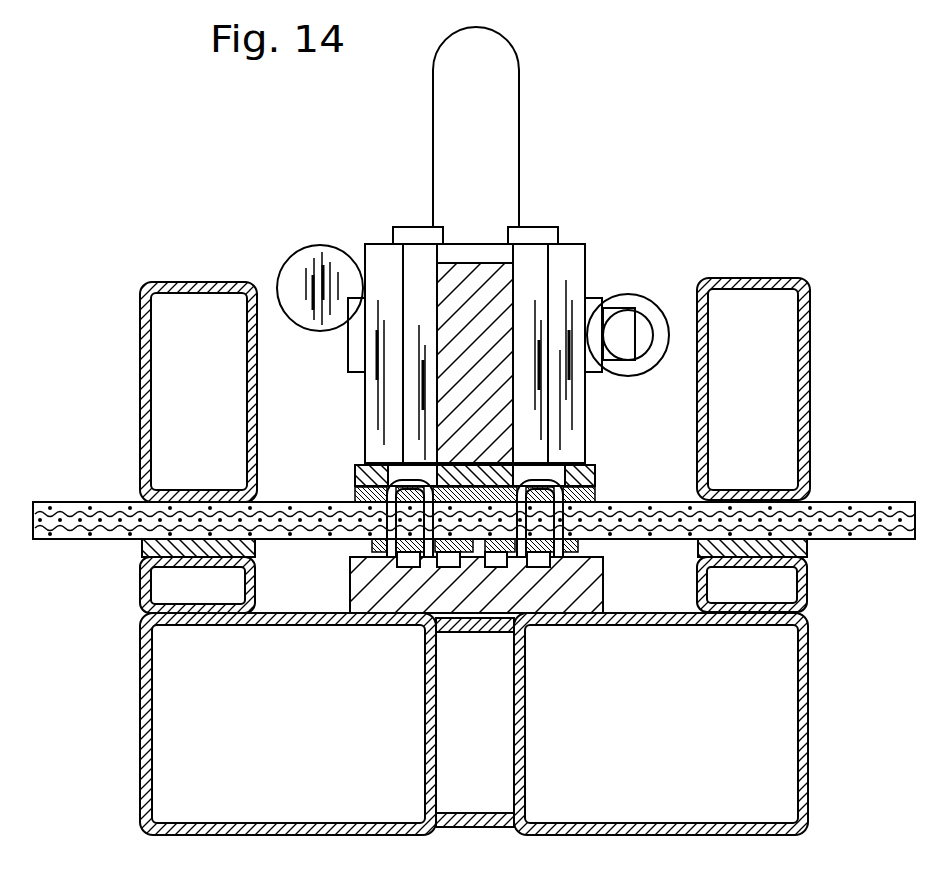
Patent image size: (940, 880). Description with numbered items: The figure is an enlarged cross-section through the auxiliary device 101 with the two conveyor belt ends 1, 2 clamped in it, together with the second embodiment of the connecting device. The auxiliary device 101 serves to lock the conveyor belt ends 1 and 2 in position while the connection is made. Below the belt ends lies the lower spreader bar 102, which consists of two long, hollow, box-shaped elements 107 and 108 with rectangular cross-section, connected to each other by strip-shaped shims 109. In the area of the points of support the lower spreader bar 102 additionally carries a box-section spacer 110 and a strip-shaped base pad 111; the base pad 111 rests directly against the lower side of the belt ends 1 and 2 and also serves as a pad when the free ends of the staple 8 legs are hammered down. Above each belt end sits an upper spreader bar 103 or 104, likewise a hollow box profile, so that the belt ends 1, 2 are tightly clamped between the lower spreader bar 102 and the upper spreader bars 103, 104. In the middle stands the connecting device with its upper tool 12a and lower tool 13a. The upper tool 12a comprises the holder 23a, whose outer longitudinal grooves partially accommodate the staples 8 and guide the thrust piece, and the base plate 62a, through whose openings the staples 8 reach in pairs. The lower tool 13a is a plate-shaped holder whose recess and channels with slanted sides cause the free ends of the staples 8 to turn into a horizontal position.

The conveyor belt end 1 is at (60, 512).
The conveyor belt end 2 is at (877, 500).
The staple 8 is at (603, 549).
The upper tool 12a is at (588, 258).
The lower tool 13a is at (350, 573).
The holder 23a is at (392, 245).
The base plate 62a is at (600, 472).
The auxiliary device 101 is at (204, 250).
The lower spreader bar 102 is at (810, 690).
The upper spreader bar 103 is at (150, 285).
The upper spreader bar 104 is at (810, 305).
The box-shaped element 107 is at (140, 750).
The box-shaped element 108 is at (812, 748).
The strip-shaped shim 109 is at (470, 812).
The spacer 110 is at (140, 607).
The strip-shaped base pad 111 is at (140, 555).